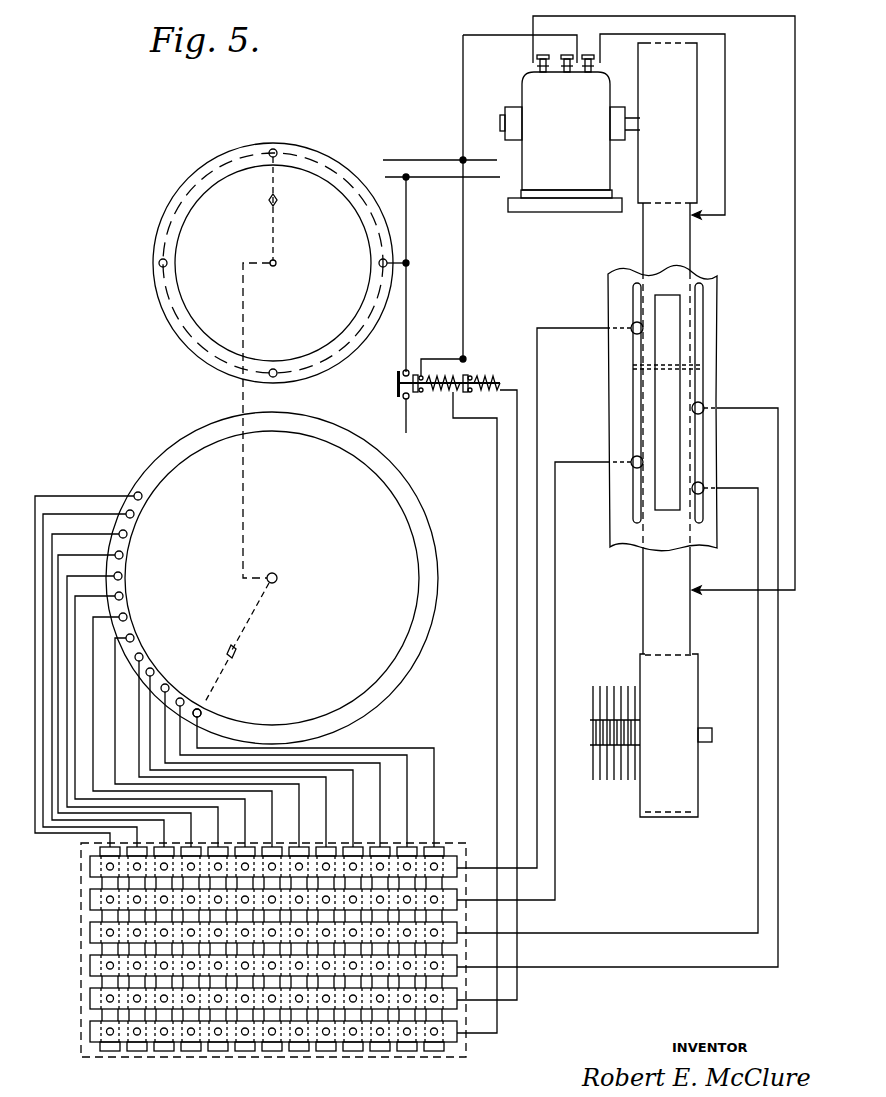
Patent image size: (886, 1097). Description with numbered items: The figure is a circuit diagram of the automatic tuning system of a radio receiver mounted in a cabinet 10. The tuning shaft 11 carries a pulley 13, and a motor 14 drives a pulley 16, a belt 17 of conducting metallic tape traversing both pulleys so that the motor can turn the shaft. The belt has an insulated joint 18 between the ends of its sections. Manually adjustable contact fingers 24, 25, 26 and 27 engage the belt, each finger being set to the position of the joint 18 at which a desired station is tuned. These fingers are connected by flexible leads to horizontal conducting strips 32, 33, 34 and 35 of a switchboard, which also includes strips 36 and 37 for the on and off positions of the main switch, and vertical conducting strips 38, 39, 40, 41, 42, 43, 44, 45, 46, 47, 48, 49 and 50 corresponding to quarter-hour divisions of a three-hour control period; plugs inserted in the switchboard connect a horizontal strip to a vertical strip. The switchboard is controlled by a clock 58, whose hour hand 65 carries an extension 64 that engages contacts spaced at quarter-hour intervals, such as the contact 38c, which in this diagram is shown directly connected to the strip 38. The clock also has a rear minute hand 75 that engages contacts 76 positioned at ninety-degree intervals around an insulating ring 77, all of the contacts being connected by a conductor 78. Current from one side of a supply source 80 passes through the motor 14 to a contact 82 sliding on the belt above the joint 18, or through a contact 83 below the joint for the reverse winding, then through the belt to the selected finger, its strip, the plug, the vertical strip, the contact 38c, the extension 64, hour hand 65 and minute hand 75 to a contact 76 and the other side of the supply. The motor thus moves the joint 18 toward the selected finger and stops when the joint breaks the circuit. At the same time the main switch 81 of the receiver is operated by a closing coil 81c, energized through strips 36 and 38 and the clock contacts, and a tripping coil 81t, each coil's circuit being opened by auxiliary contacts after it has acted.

The cabinet 10 is at (612, 408).
The tuning shaft 11 is at (713, 737).
The pulley 13 is at (698, 683).
The motor 14 is at (535, 88).
The pulley 16 is at (697, 113).
The belt 17 is at (676, 258).
The insulated joint 18 is at (668, 358).
The contact finger 24 is at (629, 328).
The contact finger 25 is at (630, 466).
The contact finger 26 is at (704, 406).
The contact finger 27 is at (704, 486).
The conducting strip 32 is at (90, 866).
The conducting strip 33 is at (90, 900).
The conducting strip 34 is at (90, 932).
The conducting strip 35 is at (90, 966).
The conducting strip 36 is at (90, 998).
The conducting strip 37 is at (90, 1032).
The conducting strip 38 is at (434, 1052).
The contact 38c is at (203, 711).
The conducting strip 39 is at (407, 1052).
The conducting strip 40 is at (380, 1052).
The conducting strip 41 is at (353, 1052).
The conducting strip 42 is at (326, 1052).
The conducting strip 43 is at (299, 1052).
The conducting strip 44 is at (272, 1052).
The conducting strip 45 is at (245, 1052).
The conducting strip 46 is at (218, 1052).
The conducting strip 47 is at (191, 1052).
The conducting strip 48 is at (164, 1052).
The conducting strip 49 is at (137, 1052).
The conducting strip 50 is at (110, 1052).
The clock 58 is at (400, 543).
The extension 64 is at (218, 674).
The hour hand 65 is at (252, 620).
The minute hand 75 is at (280, 224).
The contacts 76 is at (277, 150).
The insulating ring 77 is at (207, 173).
The conductor 78 is at (333, 173).
The supply source 80 is at (427, 173).
The main switch 81 is at (396, 379).
The closing coil 81c is at (486, 376).
The tripping coil 81t is at (447, 393).
The contact 82 is at (700, 218).
The contact 83 is at (698, 588).